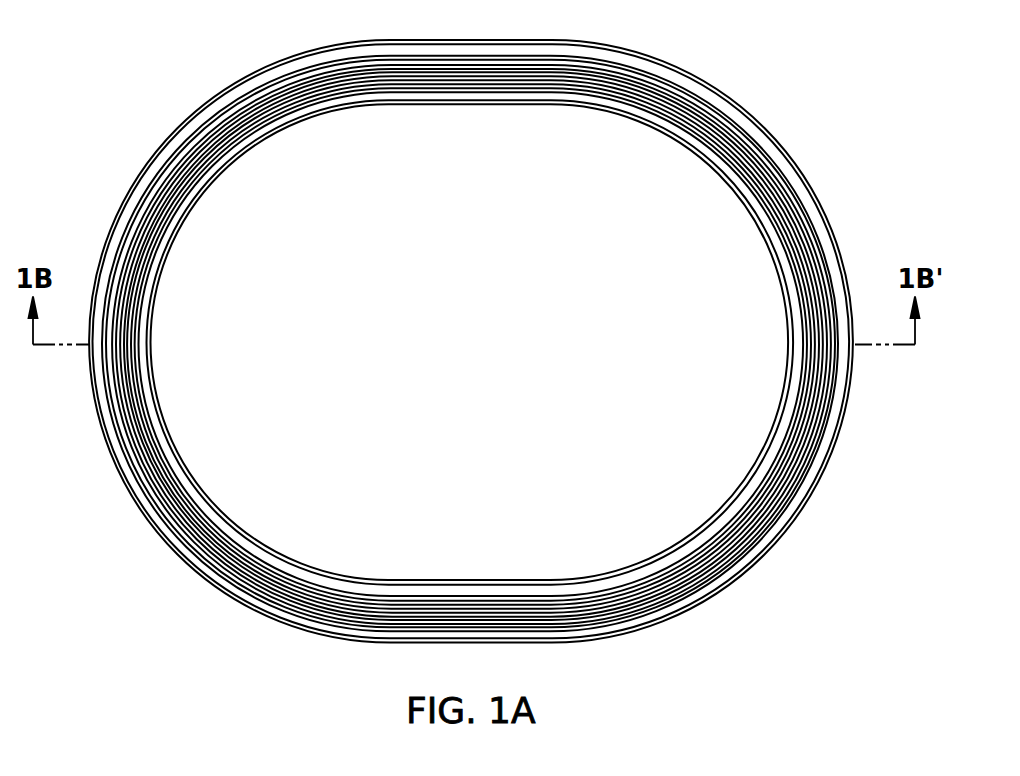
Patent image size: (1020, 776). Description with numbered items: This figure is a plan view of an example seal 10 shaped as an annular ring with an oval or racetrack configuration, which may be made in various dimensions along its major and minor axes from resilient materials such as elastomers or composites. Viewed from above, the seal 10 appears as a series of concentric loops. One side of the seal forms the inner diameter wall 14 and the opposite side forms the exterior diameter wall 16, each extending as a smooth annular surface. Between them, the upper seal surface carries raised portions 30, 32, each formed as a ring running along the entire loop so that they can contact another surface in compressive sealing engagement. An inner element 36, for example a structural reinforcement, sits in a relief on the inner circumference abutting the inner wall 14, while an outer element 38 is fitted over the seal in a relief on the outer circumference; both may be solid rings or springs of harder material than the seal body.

The seal 10 is at (472, 340).
The inner diameter wall 14 is at (750, 500).
The exterior diameter wall 16 is at (807, 475).
The raised portion 30 is at (147, 457).
The raised portion 32 is at (145, 413).
The inner element 36 is at (217, 495).
The outer element 38 is at (163, 537).